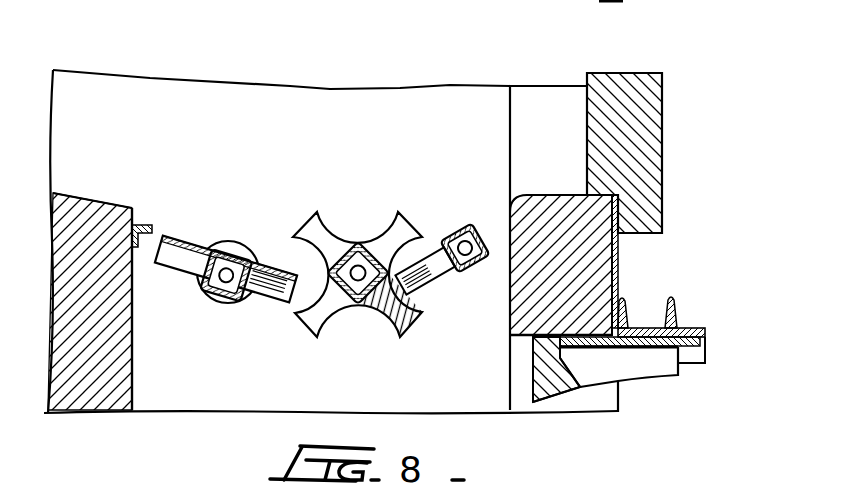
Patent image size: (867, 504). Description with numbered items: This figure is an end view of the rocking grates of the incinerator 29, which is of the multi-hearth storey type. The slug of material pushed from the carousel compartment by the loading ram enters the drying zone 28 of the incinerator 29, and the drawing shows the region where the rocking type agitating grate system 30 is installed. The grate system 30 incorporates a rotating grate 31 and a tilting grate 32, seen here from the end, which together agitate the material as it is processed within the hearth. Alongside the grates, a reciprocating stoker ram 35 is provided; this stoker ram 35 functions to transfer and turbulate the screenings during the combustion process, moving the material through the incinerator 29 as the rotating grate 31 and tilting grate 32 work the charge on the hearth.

The drying zone 28 is at (194, 134).
The incinerator 29 is at (522, 78).
The rocking type agitating grate system 30 is at (346, 192).
The rotating grate 31 is at (380, 320).
The tilting grate 32 is at (186, 262).
The reciprocating stoker ram 35 is at (631, 362).